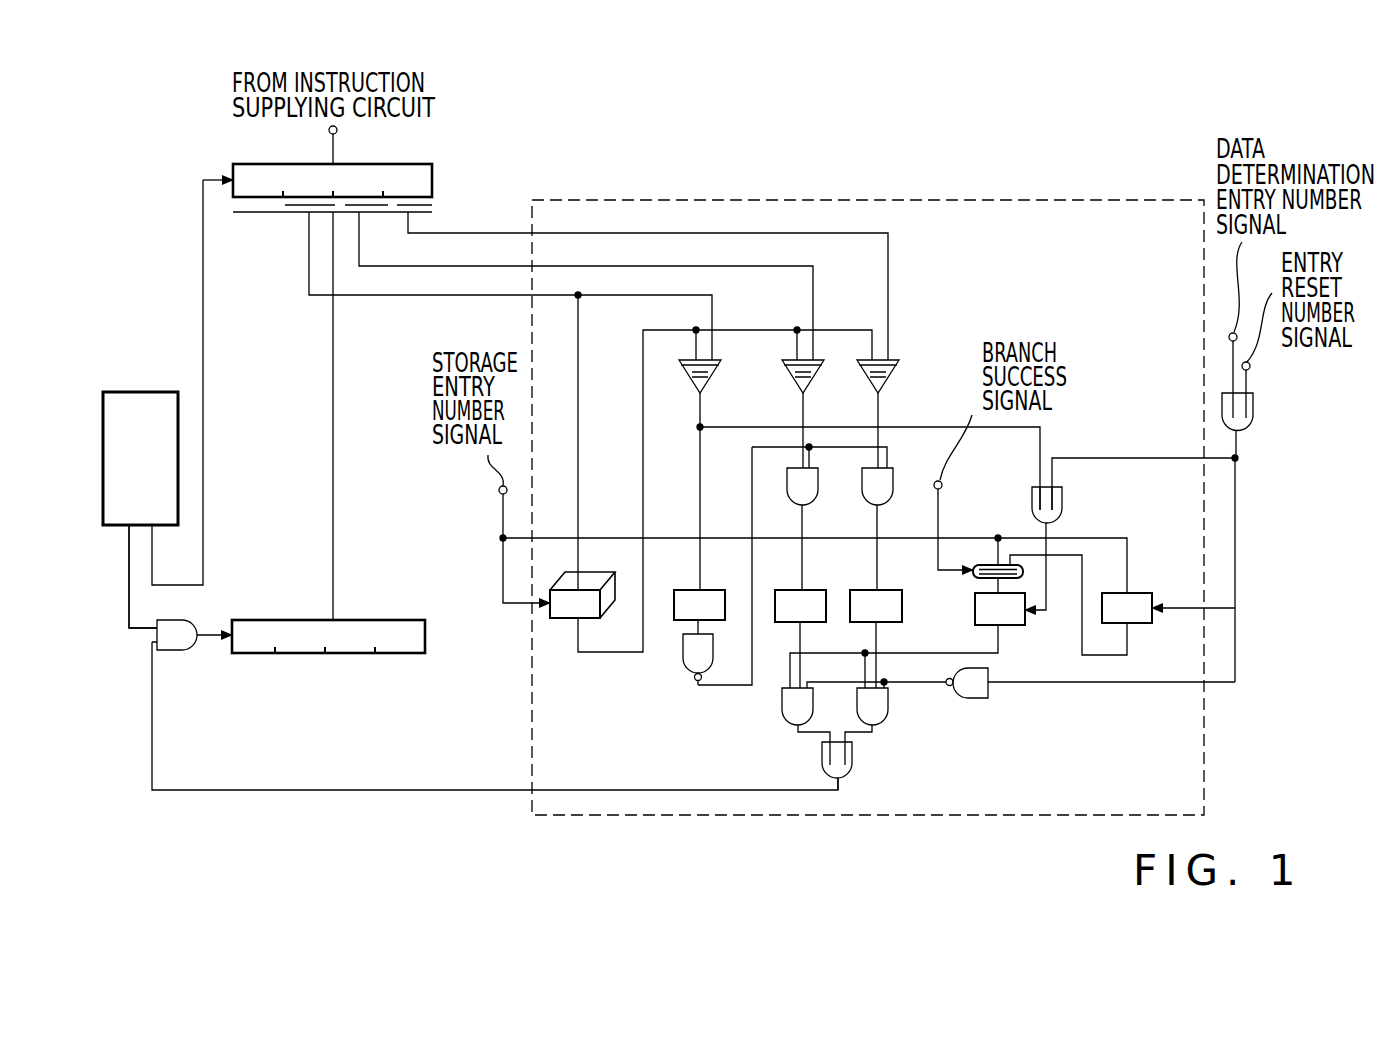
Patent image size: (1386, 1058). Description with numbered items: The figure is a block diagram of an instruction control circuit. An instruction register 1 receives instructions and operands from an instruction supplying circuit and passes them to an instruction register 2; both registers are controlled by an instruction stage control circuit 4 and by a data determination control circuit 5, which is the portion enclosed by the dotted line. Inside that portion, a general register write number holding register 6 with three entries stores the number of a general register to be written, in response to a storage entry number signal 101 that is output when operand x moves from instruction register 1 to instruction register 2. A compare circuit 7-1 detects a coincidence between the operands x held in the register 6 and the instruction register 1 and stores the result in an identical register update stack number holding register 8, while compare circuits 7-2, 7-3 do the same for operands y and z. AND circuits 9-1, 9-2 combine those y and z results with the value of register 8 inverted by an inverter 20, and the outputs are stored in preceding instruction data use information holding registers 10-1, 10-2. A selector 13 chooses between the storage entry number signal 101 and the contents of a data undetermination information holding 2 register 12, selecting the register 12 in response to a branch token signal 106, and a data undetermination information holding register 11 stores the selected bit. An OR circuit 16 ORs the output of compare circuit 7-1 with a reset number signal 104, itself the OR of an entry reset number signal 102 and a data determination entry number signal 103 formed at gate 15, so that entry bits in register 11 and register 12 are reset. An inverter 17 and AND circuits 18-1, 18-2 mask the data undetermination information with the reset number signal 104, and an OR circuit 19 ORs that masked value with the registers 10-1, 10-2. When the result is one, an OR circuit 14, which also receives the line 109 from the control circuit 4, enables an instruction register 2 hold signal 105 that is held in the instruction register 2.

The instruction register 1 is at (235, 164).
The instruction register 2 is at (384, 620).
The instruction stage control circuit 4 is at (128, 392).
The data determination control circuit 5 is at (553, 200).
The general register write number holding register 6 is at (566, 620).
The compare circuit 7-1 is at (711, 378).
The compare circuit 7-2 is at (814, 378).
The compare circuit 7-3 is at (889, 378).
The identical register update stack number holding register 8 is at (713, 590).
The AND circuit 9-1 is at (818, 488).
The AND circuit 9-2 is at (893, 488).
The preceding instruction data use information holding register 10-1 is at (818, 590).
The preceding instruction data use information holding register 10-2 is at (894, 590).
The data undetermination information holding register 11 is at (1008, 626).
The data undetermination information holding 2 register 12 is at (1146, 593).
The selector 13 is at (980, 579).
The OR circuit 14 is at (170, 650).
The OR gate 15 is at (1252, 432).
The OR circuit 16 is at (1062, 505).
The inverter 17 is at (975, 698).
The AND circuit 18-1 is at (782, 716).
The AND circuit 18-2 is at (888, 716).
The OR circuit 19 is at (852, 768).
The inverter 20 is at (683, 665).
The storage entry number signal 101 is at (503, 510).
The entry reset number signal 102 is at (1233, 385).
The data determination entry number signal 103 is at (1250, 381).
The reset number signal 104 is at (1235, 598).
The instruction register 2 hold signal 105 is at (215, 637).
The branch token signal 106 is at (940, 518).
The execution completion signal 109 is at (133, 628).